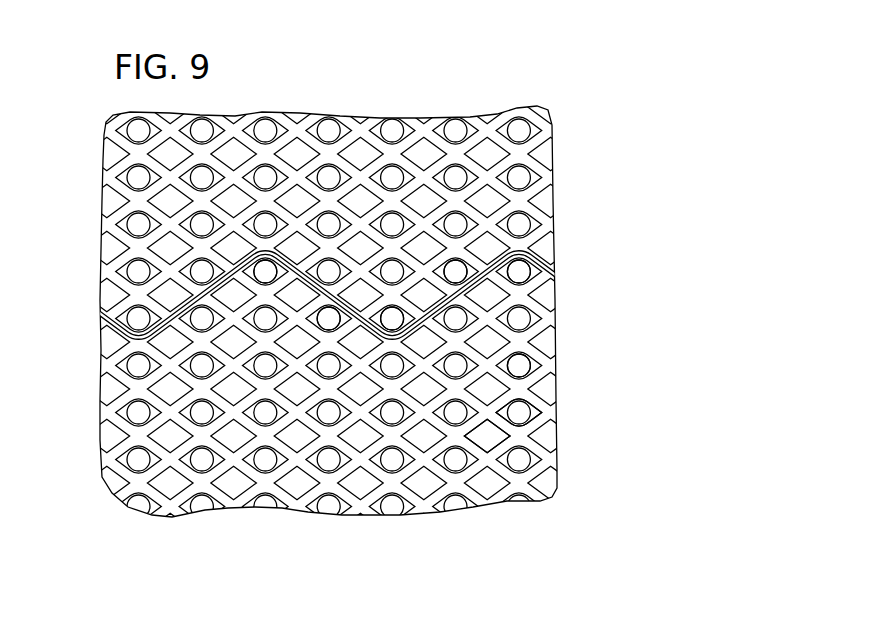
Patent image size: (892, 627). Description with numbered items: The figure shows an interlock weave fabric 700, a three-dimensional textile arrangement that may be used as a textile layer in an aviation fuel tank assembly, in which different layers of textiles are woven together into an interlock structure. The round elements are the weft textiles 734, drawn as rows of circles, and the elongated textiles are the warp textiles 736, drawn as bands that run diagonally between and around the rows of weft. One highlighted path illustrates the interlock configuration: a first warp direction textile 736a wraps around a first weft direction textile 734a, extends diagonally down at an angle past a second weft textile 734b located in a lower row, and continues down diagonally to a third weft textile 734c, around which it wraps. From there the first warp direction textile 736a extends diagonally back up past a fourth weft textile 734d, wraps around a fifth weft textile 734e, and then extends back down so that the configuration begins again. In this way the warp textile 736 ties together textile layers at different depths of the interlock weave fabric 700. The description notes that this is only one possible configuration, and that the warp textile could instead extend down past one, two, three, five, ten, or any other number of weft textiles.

The interlock weave fabric 700 is at (432, 98).
The weft textile 734 is at (519, 366).
The first weft direction textile 734a is at (265, 272).
The second weft textile 734b is at (329, 318).
The third weft textile 734c is at (392, 318).
The fourth weft textile 734d is at (456, 272).
The fifth weft textile 734e is at (519, 272).
The warp textile 736 is at (506, 432).
The first warp direction textile 736a is at (150, 296).